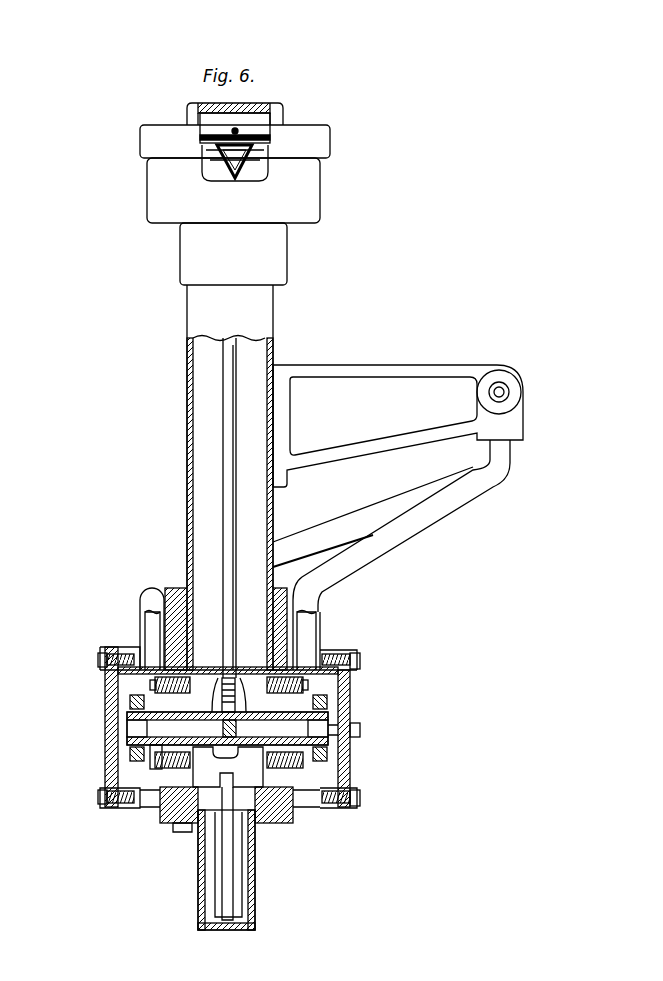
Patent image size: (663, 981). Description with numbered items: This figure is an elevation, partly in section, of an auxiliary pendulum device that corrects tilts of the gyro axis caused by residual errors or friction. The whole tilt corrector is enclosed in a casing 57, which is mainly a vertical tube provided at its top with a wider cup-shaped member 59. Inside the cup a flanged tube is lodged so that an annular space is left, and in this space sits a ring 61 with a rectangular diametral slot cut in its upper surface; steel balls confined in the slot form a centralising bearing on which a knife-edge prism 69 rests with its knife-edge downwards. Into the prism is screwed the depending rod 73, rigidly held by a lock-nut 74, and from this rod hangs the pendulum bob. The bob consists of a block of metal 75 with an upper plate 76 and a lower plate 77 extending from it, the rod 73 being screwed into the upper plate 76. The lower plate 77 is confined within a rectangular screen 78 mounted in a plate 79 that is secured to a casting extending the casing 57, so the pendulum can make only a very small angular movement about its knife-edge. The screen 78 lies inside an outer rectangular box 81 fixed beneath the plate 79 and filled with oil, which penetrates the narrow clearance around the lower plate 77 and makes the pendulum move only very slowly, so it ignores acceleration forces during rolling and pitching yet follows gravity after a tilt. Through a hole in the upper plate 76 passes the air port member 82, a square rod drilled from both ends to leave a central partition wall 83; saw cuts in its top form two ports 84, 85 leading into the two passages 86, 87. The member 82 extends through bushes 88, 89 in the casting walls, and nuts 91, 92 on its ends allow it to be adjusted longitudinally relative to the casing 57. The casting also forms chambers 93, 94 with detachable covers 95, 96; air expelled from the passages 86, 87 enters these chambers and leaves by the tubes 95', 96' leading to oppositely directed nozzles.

The casing 57 is at (205, 260).
The cup-shaped member 59 is at (310, 195).
The ring 61 is at (220, 175).
The knife-edge prism 69 is at (253, 130).
The depending rod 73 is at (222, 527).
The lock-nut 74 is at (225, 135).
The block of metal 75 is at (263, 823).
The upper plate 76 is at (137, 705).
The lower plate 77 is at (223, 873).
The rectangular screen 78 is at (217, 903).
The plate 79 is at (277, 820).
The outer rectangular box 81 is at (198, 920).
The air port member 82 is at (323, 718).
The central partition wall 83 is at (313, 810).
The port 84 is at (214, 705).
The port 85 is at (219, 705).
The passage 86 is at (150, 733).
The passage 87 is at (326, 735).
The bush 88 is at (152, 750).
The bush 89 is at (355, 808).
The nut 91 is at (133, 750).
The nut 92 is at (313, 758).
The chamber 93 is at (127, 777).
The chamber 94 is at (323, 689).
The detachable cover 95 is at (103, 727).
The tube 95' is at (128, 619).
The detachable cover 96 is at (371, 746).
The tube 96' is at (398, 517).